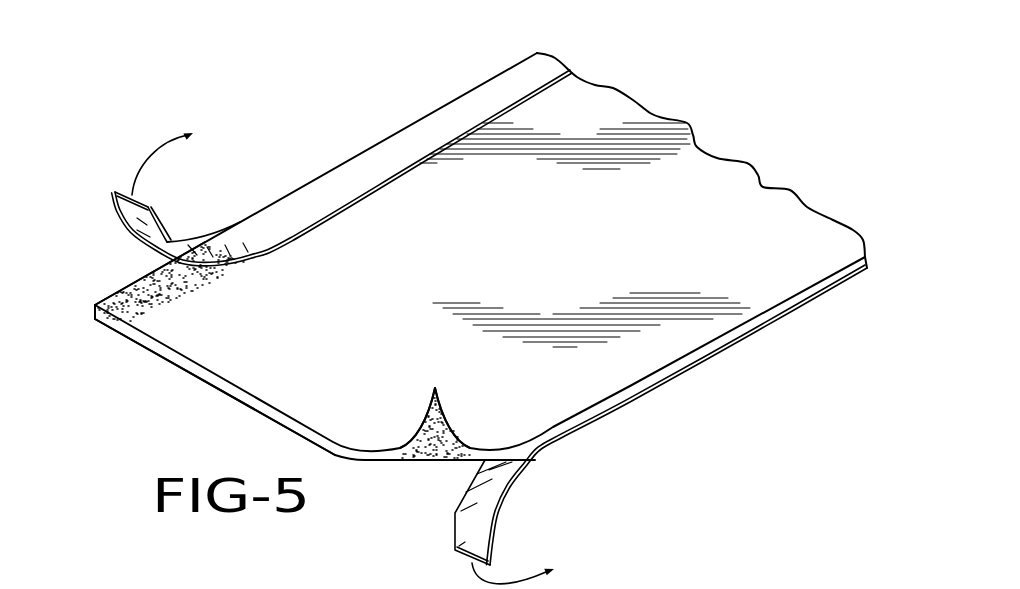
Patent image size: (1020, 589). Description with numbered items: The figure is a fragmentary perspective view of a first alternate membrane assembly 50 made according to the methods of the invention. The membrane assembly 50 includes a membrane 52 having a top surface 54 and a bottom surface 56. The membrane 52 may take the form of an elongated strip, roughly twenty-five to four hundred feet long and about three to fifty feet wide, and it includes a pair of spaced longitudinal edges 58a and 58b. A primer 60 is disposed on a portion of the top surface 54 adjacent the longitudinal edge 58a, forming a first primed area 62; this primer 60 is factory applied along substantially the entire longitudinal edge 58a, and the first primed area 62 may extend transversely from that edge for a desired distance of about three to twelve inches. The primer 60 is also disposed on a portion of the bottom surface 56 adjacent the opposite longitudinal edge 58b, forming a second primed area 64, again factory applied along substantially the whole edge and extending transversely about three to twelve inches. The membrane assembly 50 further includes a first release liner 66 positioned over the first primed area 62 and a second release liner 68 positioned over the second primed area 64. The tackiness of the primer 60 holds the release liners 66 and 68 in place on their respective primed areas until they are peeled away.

The membrane assembly 50 is at (776, 104).
The membrane 52 is at (613, 120).
The top surface 54 is at (753, 200).
The bottom surface 56 is at (413, 453).
The longitudinal edge 58a is at (95, 310).
The longitudinal edge 58b is at (685, 362).
The primer 60 is at (135, 278).
The first primed area 62 is at (170, 288).
The second primed area 64 is at (440, 430).
The first release liner 66 is at (378, 140).
The second release liner 68 is at (505, 498).